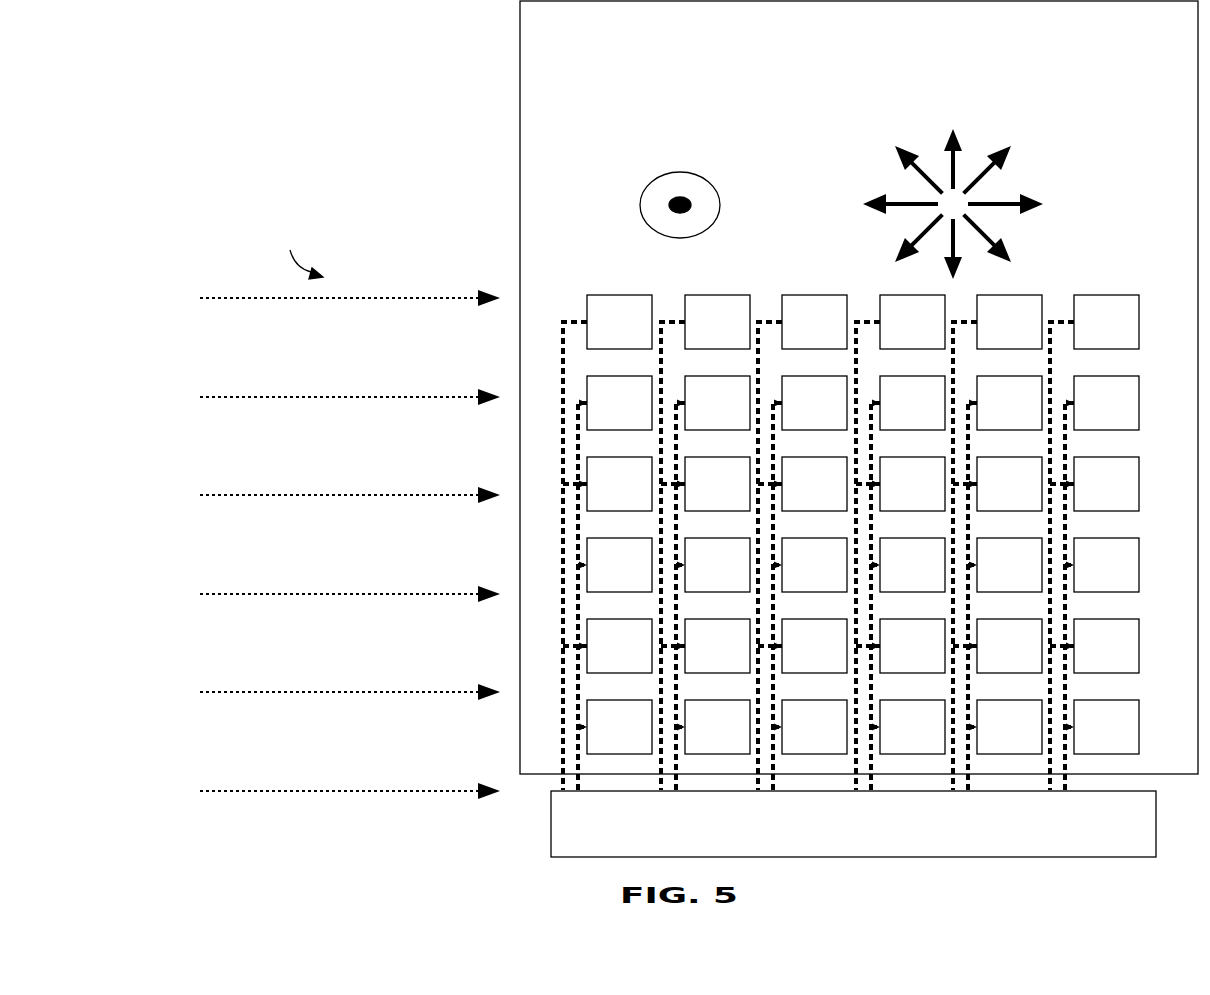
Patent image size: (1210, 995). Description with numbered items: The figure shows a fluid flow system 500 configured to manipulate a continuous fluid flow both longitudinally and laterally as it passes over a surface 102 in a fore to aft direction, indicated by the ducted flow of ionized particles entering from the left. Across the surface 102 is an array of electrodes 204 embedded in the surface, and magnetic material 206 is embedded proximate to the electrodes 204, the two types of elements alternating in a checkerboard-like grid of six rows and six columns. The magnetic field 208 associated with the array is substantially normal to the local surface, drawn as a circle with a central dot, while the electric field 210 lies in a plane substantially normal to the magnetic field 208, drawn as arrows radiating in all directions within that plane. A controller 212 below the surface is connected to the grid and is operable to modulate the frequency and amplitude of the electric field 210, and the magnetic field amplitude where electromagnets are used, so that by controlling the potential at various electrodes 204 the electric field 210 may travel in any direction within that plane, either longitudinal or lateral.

The fluid flow system 500 is at (403, 78).
The surface 102 is at (859, 395).
The array of electrodes 204 is at (863, 524).
The magnetic material 206 is at (863, 524).
The magnetic field 208 is at (720, 149).
The electric field 210 is at (1012, 133).
The controller 212 is at (853, 824).